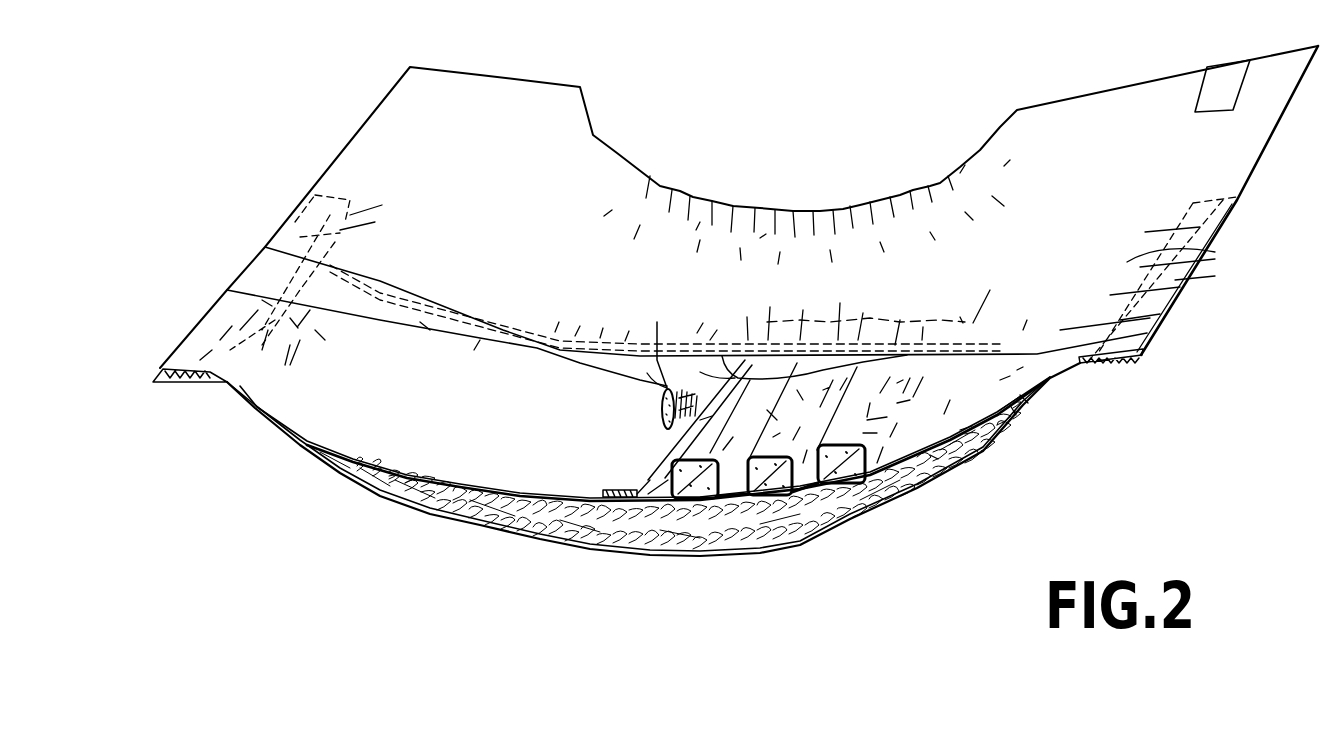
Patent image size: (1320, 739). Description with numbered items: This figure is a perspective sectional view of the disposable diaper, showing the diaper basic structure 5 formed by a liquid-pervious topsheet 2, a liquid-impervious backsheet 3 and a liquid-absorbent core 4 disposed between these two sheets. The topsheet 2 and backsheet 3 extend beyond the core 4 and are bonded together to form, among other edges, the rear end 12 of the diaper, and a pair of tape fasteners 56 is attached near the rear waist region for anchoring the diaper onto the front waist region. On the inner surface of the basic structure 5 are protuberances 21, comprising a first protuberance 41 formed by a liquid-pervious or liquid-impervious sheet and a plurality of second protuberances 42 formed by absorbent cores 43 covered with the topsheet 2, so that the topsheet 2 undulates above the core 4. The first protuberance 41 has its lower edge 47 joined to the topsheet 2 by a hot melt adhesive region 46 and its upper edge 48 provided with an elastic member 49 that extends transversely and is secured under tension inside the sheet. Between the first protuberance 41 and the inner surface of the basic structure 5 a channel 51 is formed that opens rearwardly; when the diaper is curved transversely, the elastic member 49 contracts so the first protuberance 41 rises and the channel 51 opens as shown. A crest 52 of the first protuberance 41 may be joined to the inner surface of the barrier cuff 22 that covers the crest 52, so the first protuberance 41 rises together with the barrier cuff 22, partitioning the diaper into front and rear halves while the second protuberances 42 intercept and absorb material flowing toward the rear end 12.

The liquid-pervious topsheet 2 is at (413, 458).
The liquid-impervious backsheet 3 is at (460, 527).
The liquid-absorbent core 4 is at (518, 523).
The diaper basic structure 5 is at (282, 445).
The rear end 12 is at (1200, 254).
The protuberances 21 is at (641, 421).
The barrier cuff 22 is at (532, 323).
The first protuberance 41 is at (660, 428).
The second protuberances 42 is at (667, 452).
The absorbent cores 43 is at (700, 500).
The attachment zone 46 is at (620, 494).
The lower edge 47 is at (638, 496).
The upper edge 48 is at (700, 402).
The elastic member 49 is at (660, 398).
The channel 51 is at (655, 498).
The crest 52 is at (656, 338).
The tape fasteners 56 is at (1214, 90).